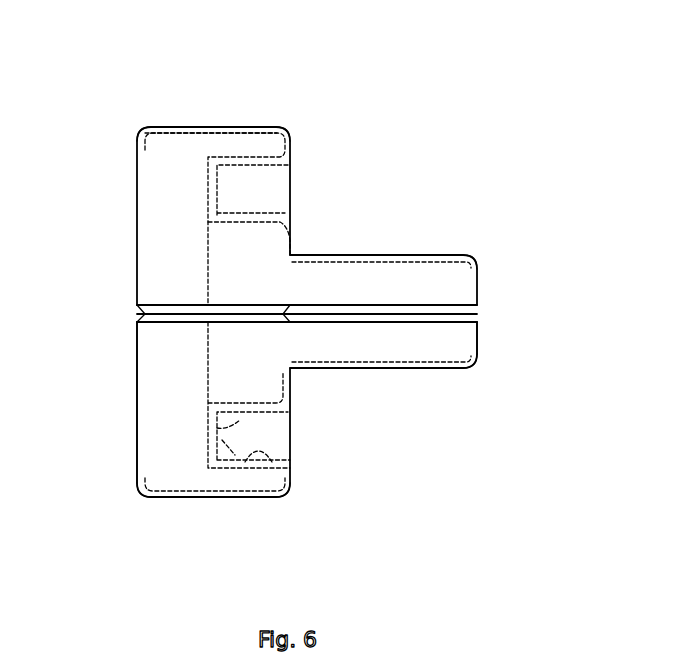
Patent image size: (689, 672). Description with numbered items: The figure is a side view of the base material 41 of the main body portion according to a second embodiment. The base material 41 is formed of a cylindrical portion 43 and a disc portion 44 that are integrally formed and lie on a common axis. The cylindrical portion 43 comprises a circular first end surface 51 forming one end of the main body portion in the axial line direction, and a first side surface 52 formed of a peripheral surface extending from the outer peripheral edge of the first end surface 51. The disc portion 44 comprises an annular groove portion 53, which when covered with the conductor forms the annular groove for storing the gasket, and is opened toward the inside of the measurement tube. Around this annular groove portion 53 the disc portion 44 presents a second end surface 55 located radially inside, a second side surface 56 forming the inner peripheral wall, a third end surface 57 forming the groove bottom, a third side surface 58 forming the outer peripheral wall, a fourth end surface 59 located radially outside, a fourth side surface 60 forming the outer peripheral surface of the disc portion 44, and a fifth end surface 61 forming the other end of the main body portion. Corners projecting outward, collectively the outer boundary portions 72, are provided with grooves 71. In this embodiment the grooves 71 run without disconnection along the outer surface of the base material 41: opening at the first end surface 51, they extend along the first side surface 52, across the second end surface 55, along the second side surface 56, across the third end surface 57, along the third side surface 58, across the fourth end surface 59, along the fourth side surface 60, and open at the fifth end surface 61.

The base material 41 is at (172, 118).
The cylindrical portion 43 is at (457, 253).
The disc portion 44 is at (200, 127).
The first end surface 51 is at (479, 334).
The first side surface 52 is at (416, 370).
The annular groove portion 53 is at (232, 187).
The second end surface 55 is at (292, 390).
The second side surface 56 is at (213, 425).
The third end surface 57 is at (232, 470).
The third side surface 58 is at (271, 480).
The fourth end surface 59 is at (292, 476).
The fourth side surface 60 is at (172, 499).
The fifth end surface 61 is at (137, 458).
The grooves 71 is at (415, 256).
The outer boundary portions 72 is at (124, 128).